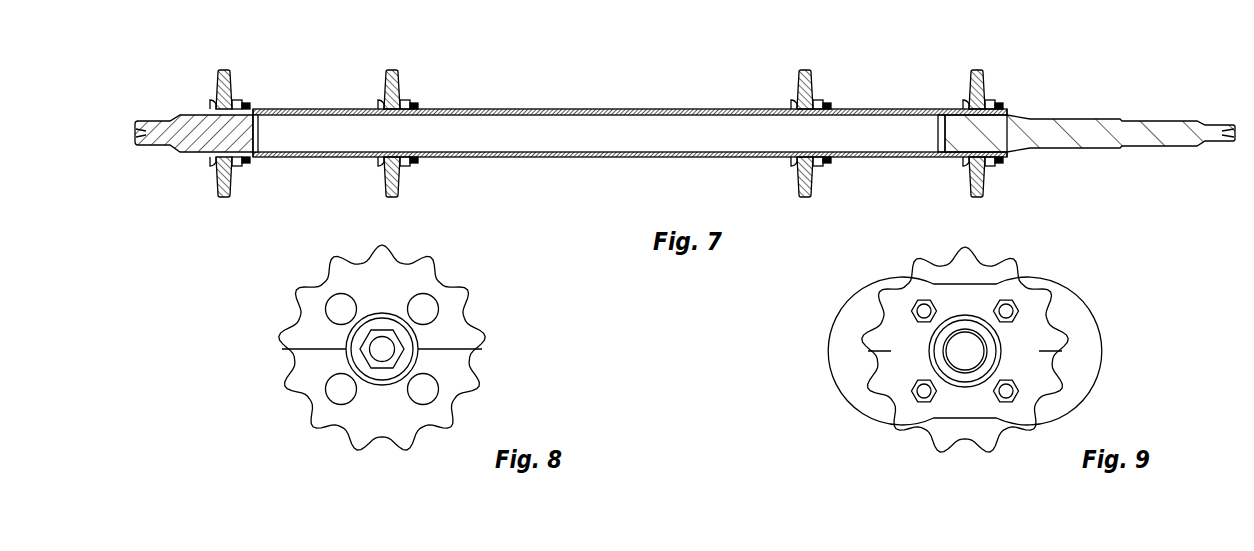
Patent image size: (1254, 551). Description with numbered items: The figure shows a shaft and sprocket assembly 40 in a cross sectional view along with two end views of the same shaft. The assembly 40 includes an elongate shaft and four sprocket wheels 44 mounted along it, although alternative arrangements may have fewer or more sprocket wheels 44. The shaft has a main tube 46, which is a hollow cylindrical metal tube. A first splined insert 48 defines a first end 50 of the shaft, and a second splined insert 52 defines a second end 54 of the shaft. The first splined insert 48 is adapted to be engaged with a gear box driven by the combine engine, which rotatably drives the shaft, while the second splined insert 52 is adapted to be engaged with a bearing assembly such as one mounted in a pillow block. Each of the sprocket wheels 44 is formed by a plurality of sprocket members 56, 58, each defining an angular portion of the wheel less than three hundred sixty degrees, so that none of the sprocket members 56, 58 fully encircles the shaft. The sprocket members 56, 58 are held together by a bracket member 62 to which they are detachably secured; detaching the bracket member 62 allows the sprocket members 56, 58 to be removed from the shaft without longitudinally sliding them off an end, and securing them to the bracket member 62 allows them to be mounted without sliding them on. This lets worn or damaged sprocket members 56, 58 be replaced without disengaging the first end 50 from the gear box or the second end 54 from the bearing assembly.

In FIG. 7, the shaft and sprocket assembly 40 is at (685, 111).
In FIG. 8, the shaft and sprocket assembly 40 is at (367, 340).
In FIG. 9, the shaft and sprocket assembly 40 is at (962, 334).
In FIG. 7, the sprocket wheel 44 is at (224, 70).
In FIG. 7, the main tube 46 is at (602, 152).
In FIG. 7, the first splined insert 48 is at (1086, 108).
In FIG. 7, the first end 50 is at (1211, 120).
In FIG. 7, the second splined insert 52 is at (153, 121).
In FIG. 7, the second end 54 is at (196, 98).
In FIG. 8, the sprocket member 56 is at (308, 368).
In FIG. 9, the sprocket member 56 is at (1048, 383).
In FIG. 8, the sprocket member 58 is at (305, 323).
In FIG. 9, the sprocket member 58 is at (946, 276).
In FIG. 9, the bracket member 62 is at (906, 327).